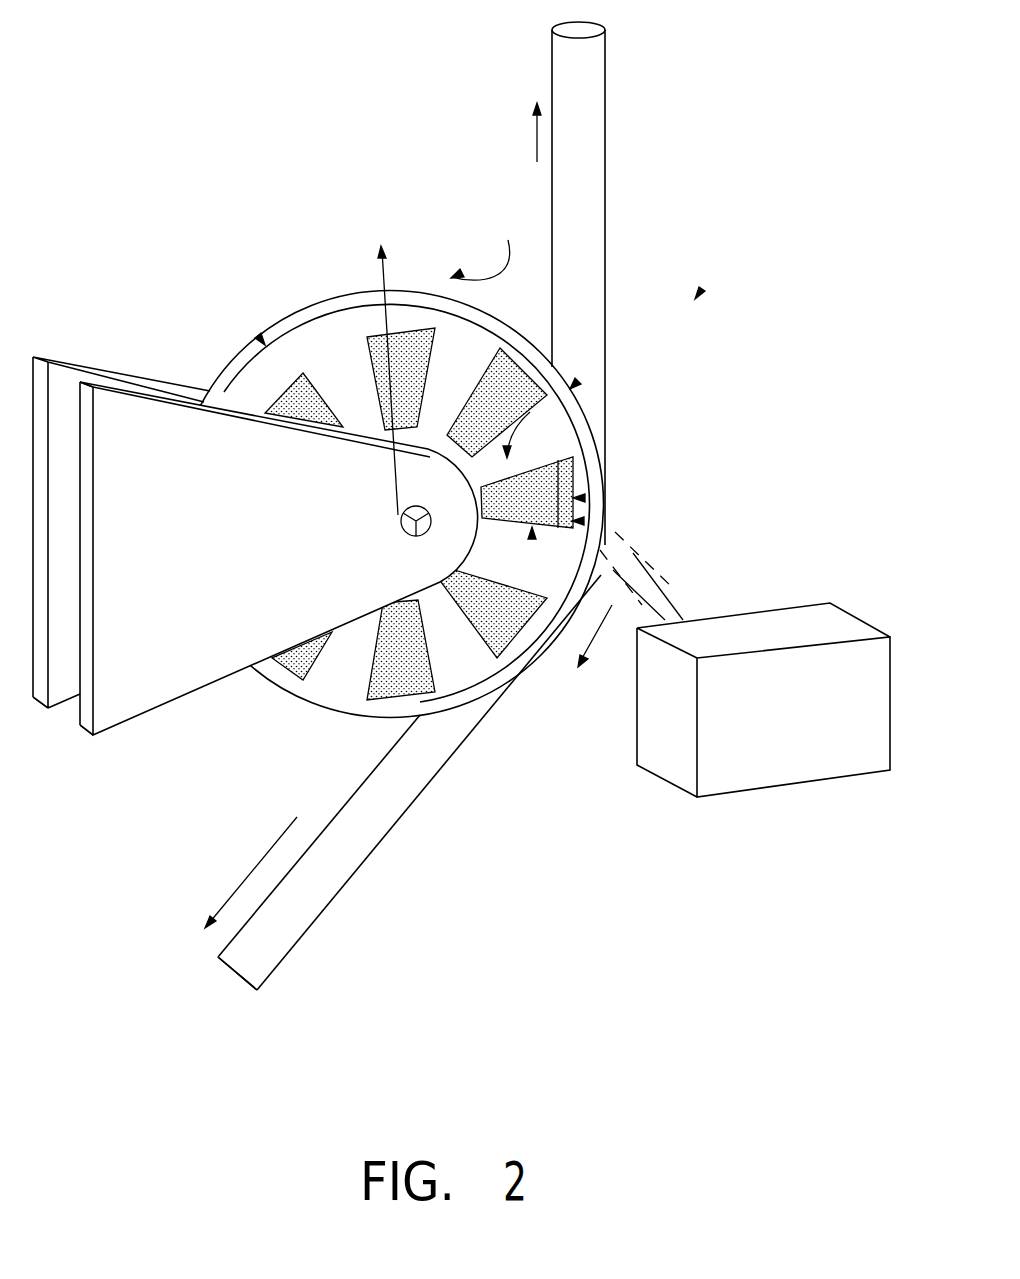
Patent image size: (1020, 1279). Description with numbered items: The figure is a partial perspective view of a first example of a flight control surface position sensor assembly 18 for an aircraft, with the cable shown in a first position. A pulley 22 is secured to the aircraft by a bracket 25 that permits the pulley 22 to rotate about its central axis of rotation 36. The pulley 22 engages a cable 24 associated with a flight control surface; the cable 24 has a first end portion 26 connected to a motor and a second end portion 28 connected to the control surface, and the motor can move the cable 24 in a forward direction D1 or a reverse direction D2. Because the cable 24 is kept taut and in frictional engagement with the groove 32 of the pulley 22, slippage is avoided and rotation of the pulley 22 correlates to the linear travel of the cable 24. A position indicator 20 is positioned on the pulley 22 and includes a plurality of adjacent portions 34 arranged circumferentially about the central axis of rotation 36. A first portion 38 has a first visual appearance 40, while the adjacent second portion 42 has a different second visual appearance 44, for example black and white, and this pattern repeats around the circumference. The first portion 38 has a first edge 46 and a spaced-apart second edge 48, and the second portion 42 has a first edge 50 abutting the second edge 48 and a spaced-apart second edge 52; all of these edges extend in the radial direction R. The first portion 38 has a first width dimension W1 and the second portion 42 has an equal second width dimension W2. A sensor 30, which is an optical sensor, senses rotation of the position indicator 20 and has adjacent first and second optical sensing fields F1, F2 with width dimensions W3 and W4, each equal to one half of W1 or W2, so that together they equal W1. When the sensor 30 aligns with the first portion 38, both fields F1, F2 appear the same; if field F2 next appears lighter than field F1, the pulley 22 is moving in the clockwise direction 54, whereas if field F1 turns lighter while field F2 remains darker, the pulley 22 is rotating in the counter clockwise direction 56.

The flight control surface position sensor assembly 18 is at (697, 296).
The position indicator 20 is at (582, 408).
The pulley 22 is at (298, 333).
The cable 24 is at (583, 172).
The bracket 25 is at (123, 408).
The first end portion 26 is at (263, 960).
The second end portion 28 is at (582, 63).
The sensor 30 is at (748, 737).
The groove 32 is at (262, 340).
The plurality of adjacent portions 34 is at (500, 355).
The central axis of rotation 36 is at (450, 562).
The first portion 38 is at (574, 454).
The first visual appearance 40 is at (532, 538).
The second portion 42 is at (563, 417).
The second visual appearance 44 is at (572, 386).
The first edge 46 is at (522, 522).
The second edge 48 is at (480, 484).
The first edge 50 is at (553, 445).
The second edge 52 is at (485, 460).
The clockwise direction 54 is at (600, 645).
The counter clockwise direction 56 is at (480, 249).
The radial direction R is at (386, 265).
The forward direction D1 is at (537, 143).
The reverse direction D2 is at (253, 868).
The first width dimension W1 is at (574, 477).
The second width dimension W2 is at (577, 412).
The width dimension W3 is at (518, 563).
The width dimension W4 is at (483, 517).
The first optical sensing field F1 is at (574, 521).
The second optical sensing field F2 is at (576, 498).